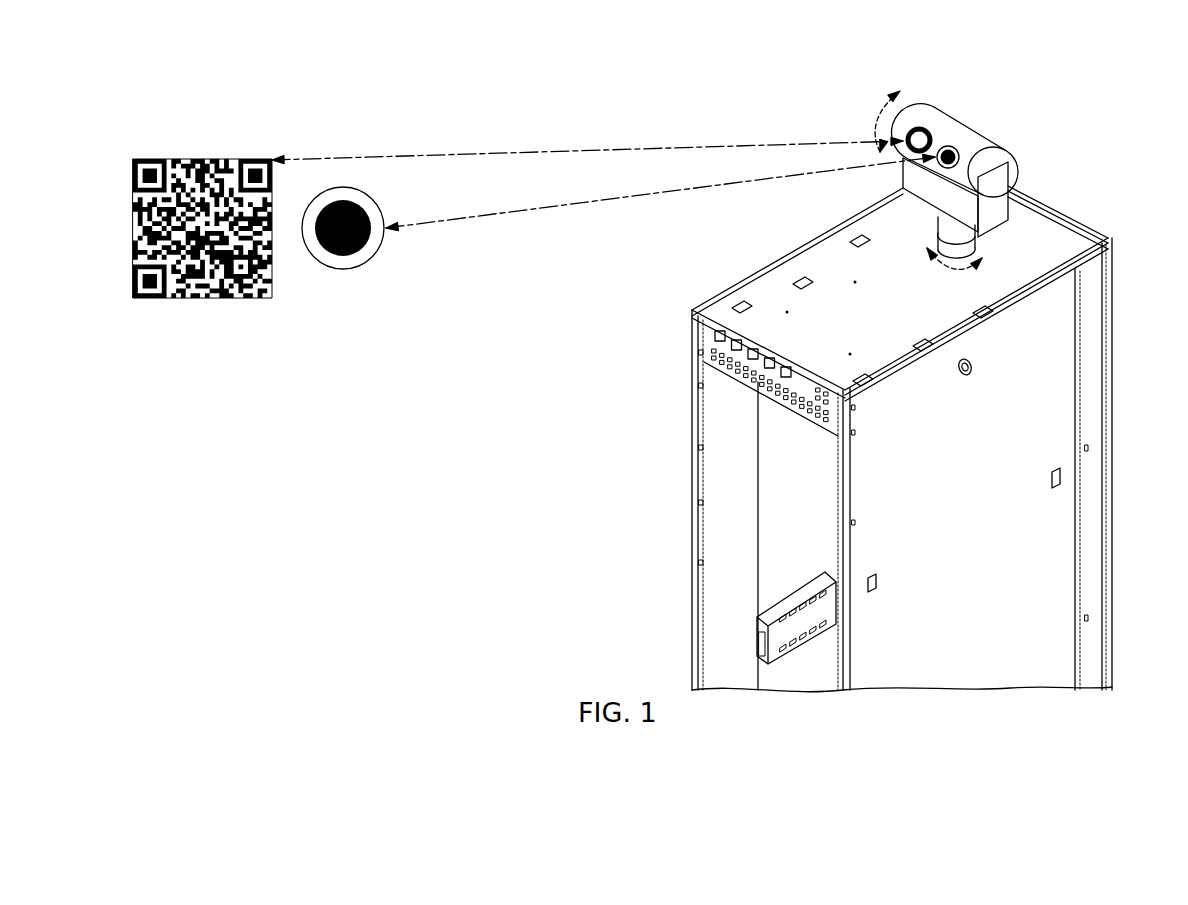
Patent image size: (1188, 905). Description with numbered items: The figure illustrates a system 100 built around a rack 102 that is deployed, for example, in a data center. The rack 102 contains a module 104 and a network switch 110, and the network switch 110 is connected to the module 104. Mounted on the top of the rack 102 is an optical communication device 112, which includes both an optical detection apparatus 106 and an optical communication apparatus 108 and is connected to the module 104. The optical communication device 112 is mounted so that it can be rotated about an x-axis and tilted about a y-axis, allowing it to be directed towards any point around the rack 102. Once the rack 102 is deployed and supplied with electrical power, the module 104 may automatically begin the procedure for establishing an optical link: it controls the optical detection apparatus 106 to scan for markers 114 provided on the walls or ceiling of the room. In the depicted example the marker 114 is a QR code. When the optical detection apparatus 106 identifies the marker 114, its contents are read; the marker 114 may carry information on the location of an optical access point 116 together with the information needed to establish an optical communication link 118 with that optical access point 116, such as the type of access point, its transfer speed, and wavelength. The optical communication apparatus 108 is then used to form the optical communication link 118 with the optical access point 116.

The system 100 is at (430, 59).
The rack 102 is at (901, 439).
The module 104 is at (715, 333).
The optical detection apparatus 106 is at (918, 128).
The optical communication apparatus 108 is at (950, 146).
The network switch 110 is at (733, 381).
The optical communication device 112 is at (1001, 162).
The marker 114 is at (203, 159).
The optical access point 116 is at (343, 258).
The optical communication link 118 is at (577, 205).